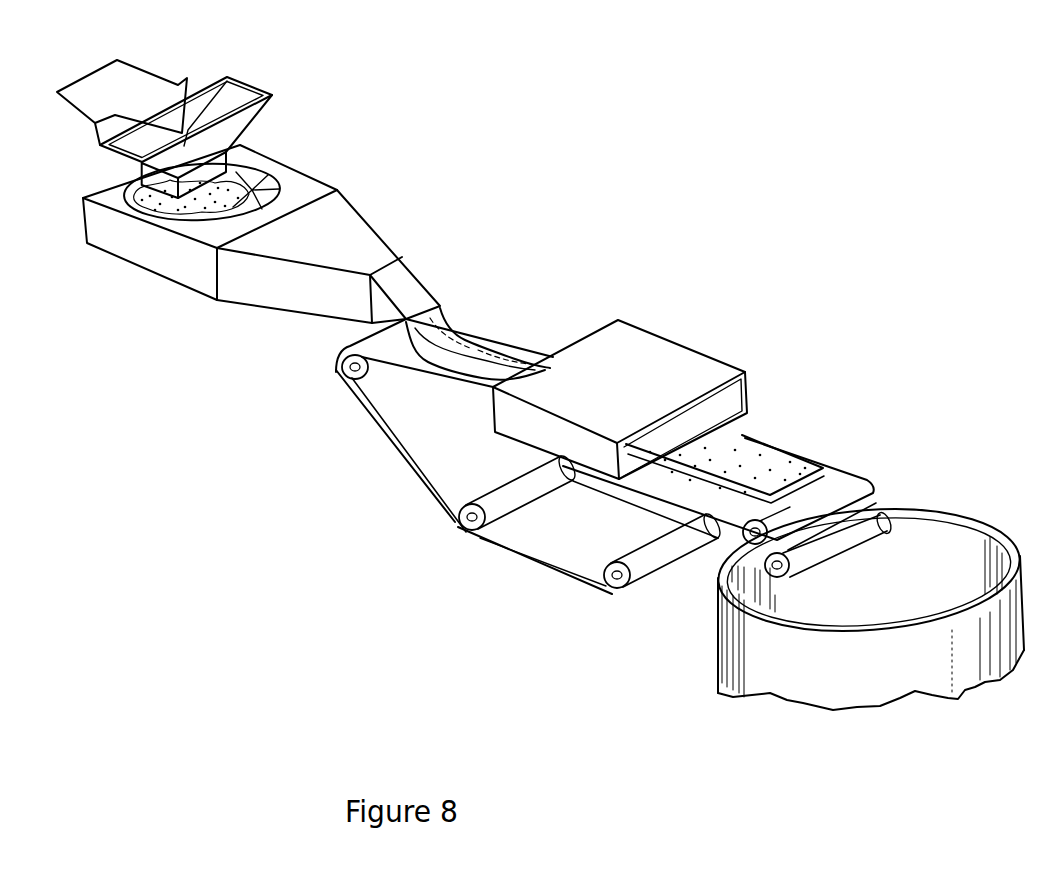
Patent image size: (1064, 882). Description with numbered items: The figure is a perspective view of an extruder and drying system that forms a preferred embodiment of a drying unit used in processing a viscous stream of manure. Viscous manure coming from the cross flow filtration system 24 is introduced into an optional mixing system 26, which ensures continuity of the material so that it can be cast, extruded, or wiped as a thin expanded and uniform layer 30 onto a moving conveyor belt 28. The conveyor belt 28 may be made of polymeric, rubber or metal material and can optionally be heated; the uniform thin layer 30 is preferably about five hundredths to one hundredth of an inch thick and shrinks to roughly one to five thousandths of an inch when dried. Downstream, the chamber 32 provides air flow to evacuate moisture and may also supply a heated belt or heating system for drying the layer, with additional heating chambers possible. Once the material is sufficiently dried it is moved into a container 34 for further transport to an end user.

The cross flow filtration system 24 is at (258, 82).
The mixing system 26 is at (248, 182).
The conveyor belt 28 is at (540, 338).
The thin expanded and uniform layer 30 is at (455, 325).
The chamber 32 is at (703, 355).
The container 34 is at (933, 508).